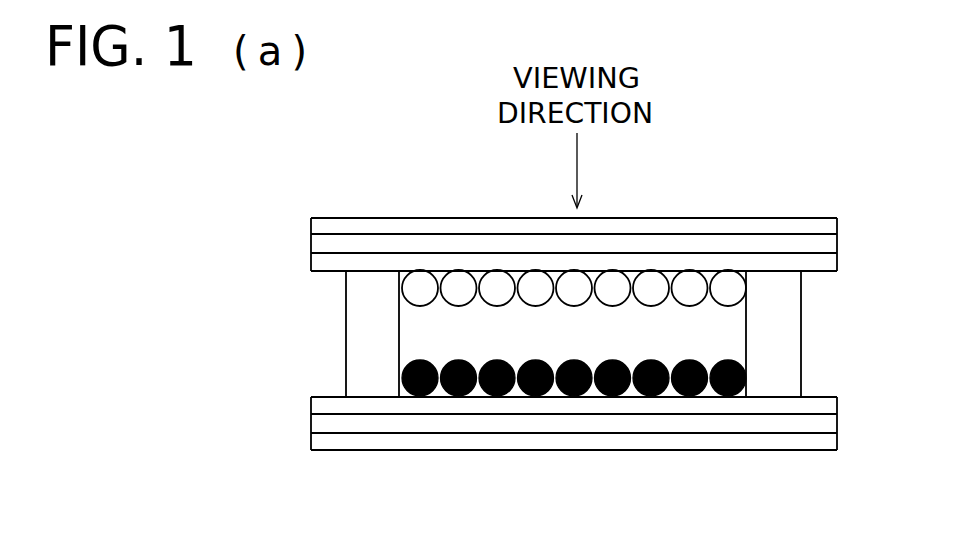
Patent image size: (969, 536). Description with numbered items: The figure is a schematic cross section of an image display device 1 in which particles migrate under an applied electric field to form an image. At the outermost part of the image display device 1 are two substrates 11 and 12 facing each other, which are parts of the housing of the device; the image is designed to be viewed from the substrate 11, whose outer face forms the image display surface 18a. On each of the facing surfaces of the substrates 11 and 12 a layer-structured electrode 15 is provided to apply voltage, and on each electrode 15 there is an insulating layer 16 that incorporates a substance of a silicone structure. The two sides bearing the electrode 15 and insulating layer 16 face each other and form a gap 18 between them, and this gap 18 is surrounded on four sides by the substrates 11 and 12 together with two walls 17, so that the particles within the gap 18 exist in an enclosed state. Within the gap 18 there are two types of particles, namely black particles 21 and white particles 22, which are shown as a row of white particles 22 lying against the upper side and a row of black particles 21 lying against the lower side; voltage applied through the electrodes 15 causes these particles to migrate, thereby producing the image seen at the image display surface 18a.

The image display device 1 is at (792, 178).
The substrate 11 is at (310, 230).
The substrate 12 is at (310, 442).
The electrode 15 is at (310, 249).
The insulating layer 16 is at (308, 267).
The wall 17 is at (375, 378).
The gap 18 is at (725, 337).
The image display surface 18a is at (727, 218).
The black particles 21 is at (653, 397).
The white particles 22 is at (650, 283).